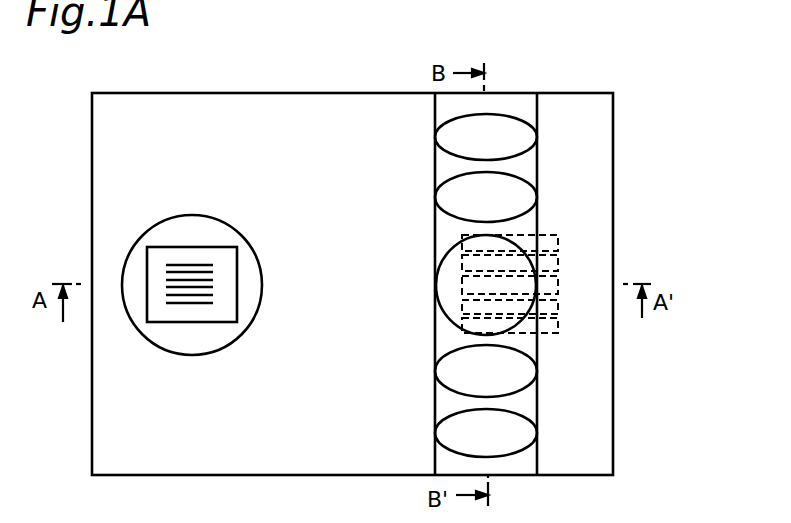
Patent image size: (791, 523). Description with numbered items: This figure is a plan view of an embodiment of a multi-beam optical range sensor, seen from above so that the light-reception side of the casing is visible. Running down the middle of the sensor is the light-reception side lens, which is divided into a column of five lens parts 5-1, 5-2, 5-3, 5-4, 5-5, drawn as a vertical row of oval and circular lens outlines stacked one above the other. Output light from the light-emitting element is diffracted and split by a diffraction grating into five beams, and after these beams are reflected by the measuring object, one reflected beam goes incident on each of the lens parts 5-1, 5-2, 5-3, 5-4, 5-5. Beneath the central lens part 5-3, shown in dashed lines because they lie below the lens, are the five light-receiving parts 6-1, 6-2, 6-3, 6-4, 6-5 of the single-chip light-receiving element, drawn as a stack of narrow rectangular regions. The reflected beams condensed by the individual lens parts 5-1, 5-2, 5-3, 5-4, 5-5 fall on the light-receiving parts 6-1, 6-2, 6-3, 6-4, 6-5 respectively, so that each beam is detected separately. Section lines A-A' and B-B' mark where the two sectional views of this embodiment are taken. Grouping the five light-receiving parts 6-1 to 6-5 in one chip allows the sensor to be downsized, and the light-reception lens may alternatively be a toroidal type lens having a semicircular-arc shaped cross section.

The lens part 5-1 is at (440, 428).
The lens part 5-2 is at (440, 368).
The lens part 5-3 is at (435, 302).
The lens part 5-4 is at (435, 189).
The lens part 5-5 is at (435, 137).
The light-receiving part 6-1 is at (558, 325).
The light-receiving part 6-2 is at (558, 303).
The light-receiving part 6-3 is at (558, 285).
The light-receiving part 6-4 is at (558, 268).
The light-receiving part 6-5 is at (558, 242).